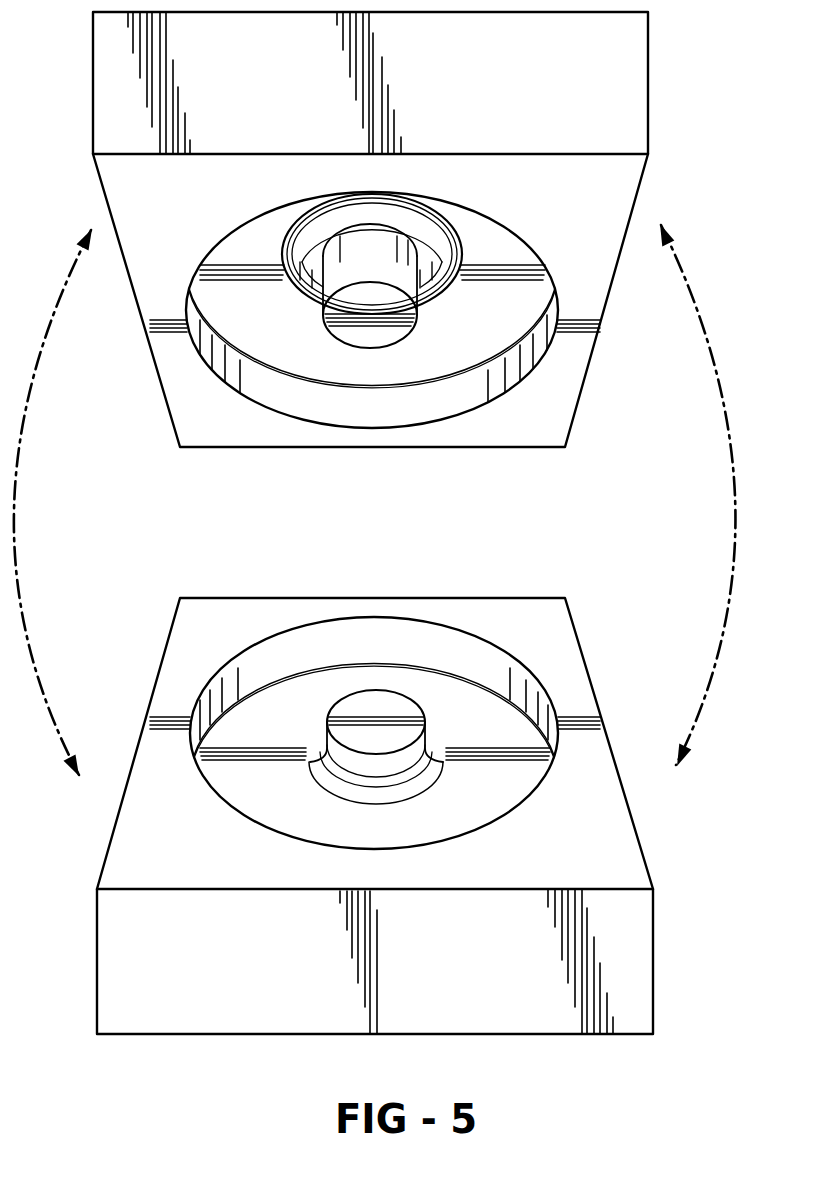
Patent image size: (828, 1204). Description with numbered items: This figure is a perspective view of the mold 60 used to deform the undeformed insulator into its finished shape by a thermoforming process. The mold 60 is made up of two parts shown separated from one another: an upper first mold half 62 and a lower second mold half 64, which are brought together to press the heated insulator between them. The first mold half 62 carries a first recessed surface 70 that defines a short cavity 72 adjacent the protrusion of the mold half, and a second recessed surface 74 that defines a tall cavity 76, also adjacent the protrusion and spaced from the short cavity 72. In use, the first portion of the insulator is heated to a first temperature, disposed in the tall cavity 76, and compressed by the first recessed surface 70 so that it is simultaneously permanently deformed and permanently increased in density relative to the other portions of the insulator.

The mold 60 is at (375, 523).
The first mold half 62 is at (403, 229).
The second mold half 64 is at (635, 945).
The first recessed surface 70 is at (320, 264).
The short cavity 72 is at (320, 237).
The second recessed surface 74 is at (228, 314).
The tall cavity 76 is at (369, 299).